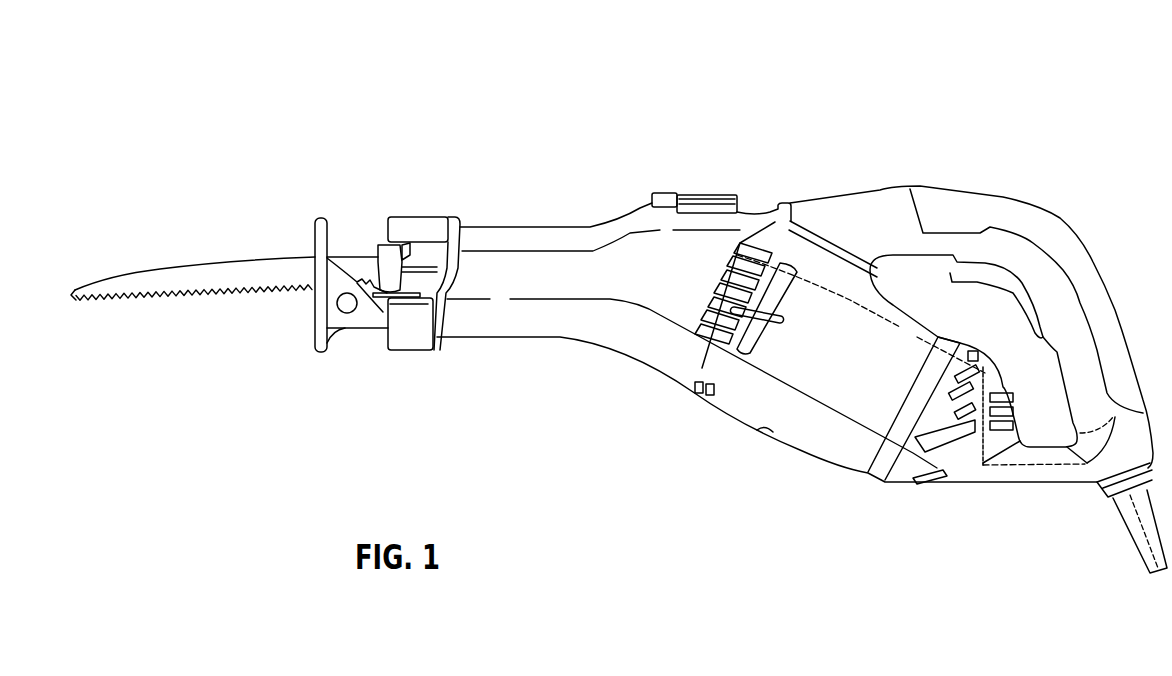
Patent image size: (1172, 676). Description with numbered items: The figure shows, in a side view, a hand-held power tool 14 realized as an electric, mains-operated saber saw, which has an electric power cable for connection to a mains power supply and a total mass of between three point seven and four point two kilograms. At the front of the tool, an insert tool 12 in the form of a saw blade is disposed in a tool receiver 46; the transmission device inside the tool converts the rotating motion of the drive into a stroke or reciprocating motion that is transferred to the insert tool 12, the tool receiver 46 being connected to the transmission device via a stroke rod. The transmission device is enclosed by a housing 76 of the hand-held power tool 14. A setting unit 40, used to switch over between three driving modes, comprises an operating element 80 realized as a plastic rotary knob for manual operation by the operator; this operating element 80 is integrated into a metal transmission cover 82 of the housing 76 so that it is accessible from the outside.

The insert tool 12 is at (193, 278).
The hand-held power tool 14 is at (1027, 93).
The setting unit 40 is at (687, 188).
The tool receiver 46 is at (378, 243).
The housing 76 is at (647, 350).
The operating element 80 is at (670, 192).
The transmission cover 82 is at (732, 203).